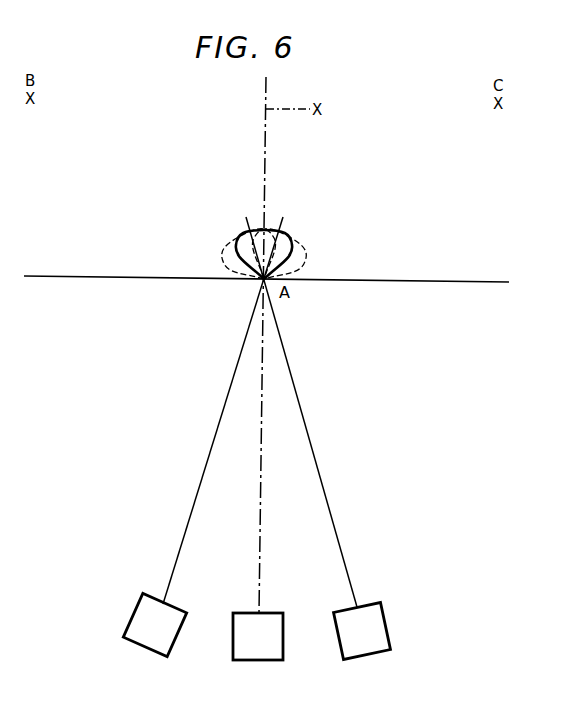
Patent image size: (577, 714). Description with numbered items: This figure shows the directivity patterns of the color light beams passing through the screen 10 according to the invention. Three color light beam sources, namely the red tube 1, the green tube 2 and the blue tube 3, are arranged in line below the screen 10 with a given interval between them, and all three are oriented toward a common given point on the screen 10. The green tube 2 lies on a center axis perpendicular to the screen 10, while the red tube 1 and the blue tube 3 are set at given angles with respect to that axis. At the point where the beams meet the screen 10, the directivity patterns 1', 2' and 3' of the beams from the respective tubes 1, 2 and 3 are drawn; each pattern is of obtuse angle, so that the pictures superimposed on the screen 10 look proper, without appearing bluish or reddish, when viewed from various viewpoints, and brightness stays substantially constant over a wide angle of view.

The red tube 1 is at (203, 437).
The green tube 2 is at (264, 617).
The blue tube 3 is at (323, 438).
The directivity pattern of light beam from red tube 1' is at (293, 258).
The directivity pattern of light beam from green tube 2' is at (280, 240).
The directivity pattern of light beam from blue tube 3' is at (240, 258).
The screen 10 is at (450, 281).